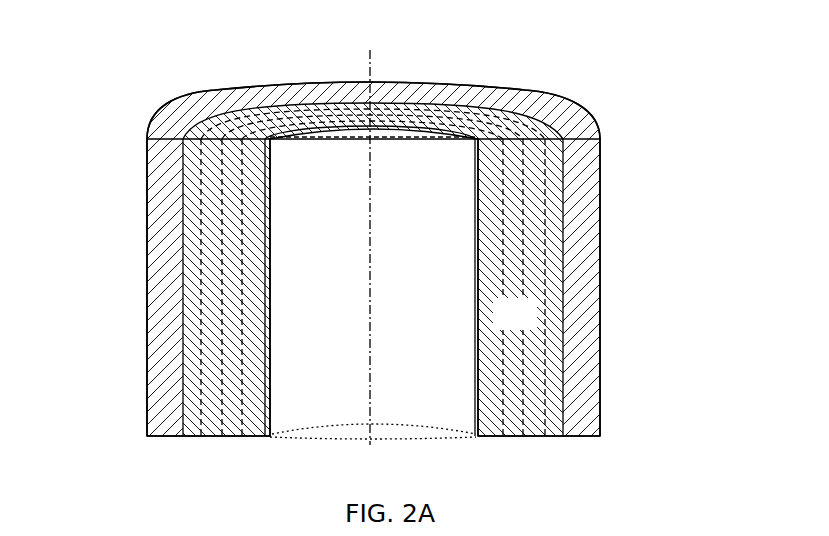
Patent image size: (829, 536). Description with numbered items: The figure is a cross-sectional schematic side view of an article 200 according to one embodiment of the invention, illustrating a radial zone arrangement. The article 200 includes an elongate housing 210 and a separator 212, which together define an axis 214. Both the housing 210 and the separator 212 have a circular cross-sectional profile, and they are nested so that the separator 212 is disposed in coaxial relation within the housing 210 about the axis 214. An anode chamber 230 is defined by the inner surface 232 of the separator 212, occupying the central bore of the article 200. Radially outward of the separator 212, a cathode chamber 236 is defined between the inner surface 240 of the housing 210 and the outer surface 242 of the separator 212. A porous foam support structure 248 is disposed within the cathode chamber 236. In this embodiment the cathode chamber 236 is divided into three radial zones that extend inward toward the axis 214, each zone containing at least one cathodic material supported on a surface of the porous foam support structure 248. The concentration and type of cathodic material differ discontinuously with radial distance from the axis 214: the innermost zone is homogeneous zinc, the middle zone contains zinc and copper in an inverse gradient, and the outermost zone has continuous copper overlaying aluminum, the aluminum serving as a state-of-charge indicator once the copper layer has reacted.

The article 200 is at (92, 158).
The elongate housing 210 is at (582, 187).
The separator 212 is at (478, 140).
The axis 214 is at (372, 192).
The anode chamber 230 is at (420, 323).
The inner surface of the separator 232 is at (273, 425).
The cathode chamber 236 is at (531, 323).
The inner surface of the housing 240 is at (185, 421).
The outer surface of the separator 242 is at (245, 150).
The porous foam support structure 248 is at (562, 438).